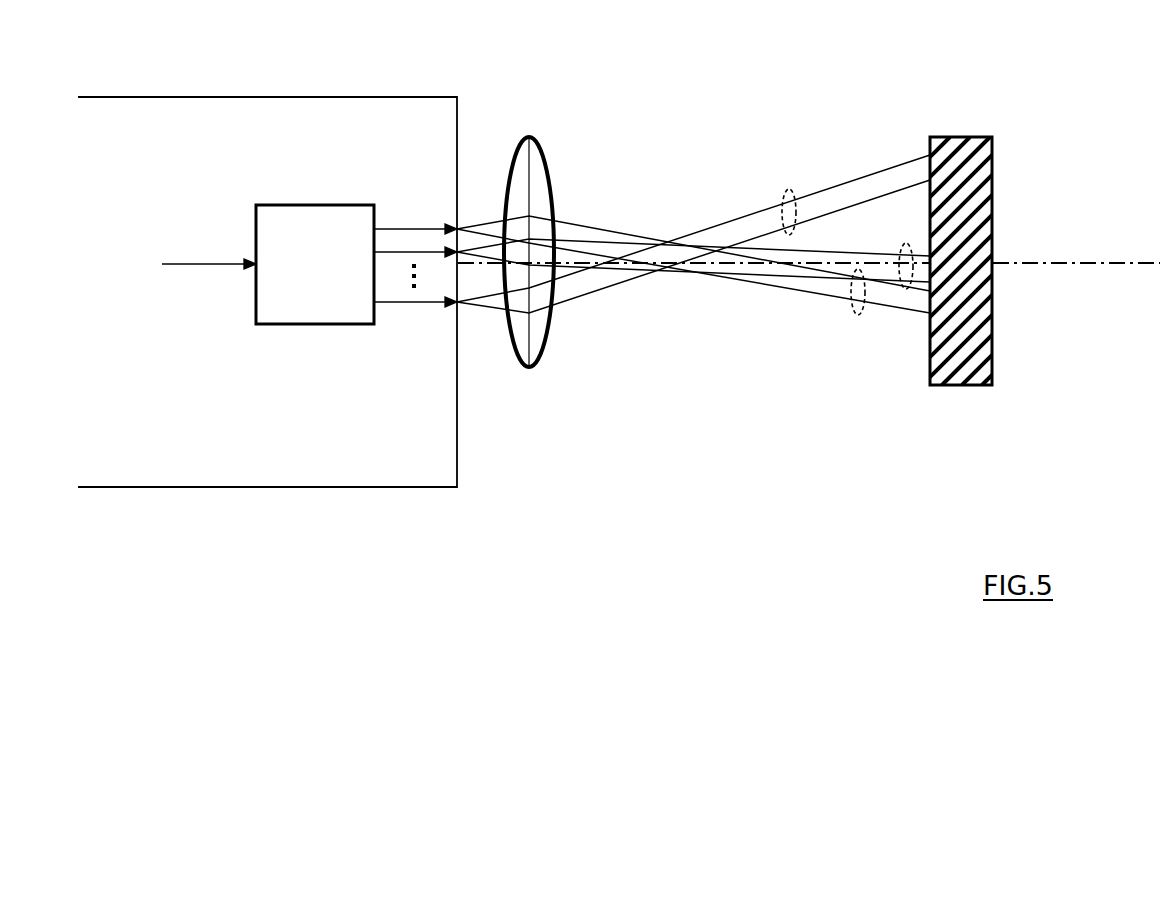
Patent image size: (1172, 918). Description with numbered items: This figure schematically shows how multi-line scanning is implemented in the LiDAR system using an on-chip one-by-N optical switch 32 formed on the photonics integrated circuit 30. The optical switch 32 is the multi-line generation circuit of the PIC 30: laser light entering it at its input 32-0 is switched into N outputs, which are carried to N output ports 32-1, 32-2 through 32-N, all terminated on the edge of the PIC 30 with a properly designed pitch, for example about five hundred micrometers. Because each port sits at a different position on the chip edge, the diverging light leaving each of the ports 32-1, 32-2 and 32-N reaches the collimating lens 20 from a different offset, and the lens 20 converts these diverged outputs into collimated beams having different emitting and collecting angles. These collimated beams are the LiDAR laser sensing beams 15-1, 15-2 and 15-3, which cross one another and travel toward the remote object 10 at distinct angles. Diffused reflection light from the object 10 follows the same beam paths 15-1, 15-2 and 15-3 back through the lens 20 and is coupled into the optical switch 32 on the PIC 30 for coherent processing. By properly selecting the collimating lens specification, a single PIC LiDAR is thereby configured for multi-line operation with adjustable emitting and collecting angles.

The remote object 10 is at (950, 175).
The LiDAR laser sensing beam 15-1 is at (907, 275).
The LiDAR laser sensing beam 15-2 is at (855, 300).
The LiDAR laser sensing beam 15-3 is at (780, 218).
The collimating lens 20 is at (540, 158).
The photonics integrated circuit 30 is at (437, 120).
The 1×N optical switch 32 is at (268, 220).
The optical switch input 32-0 is at (170, 262).
The output port 32-1 is at (450, 228).
The output port 32-2 is at (385, 253).
The output port 32-N is at (397, 302).